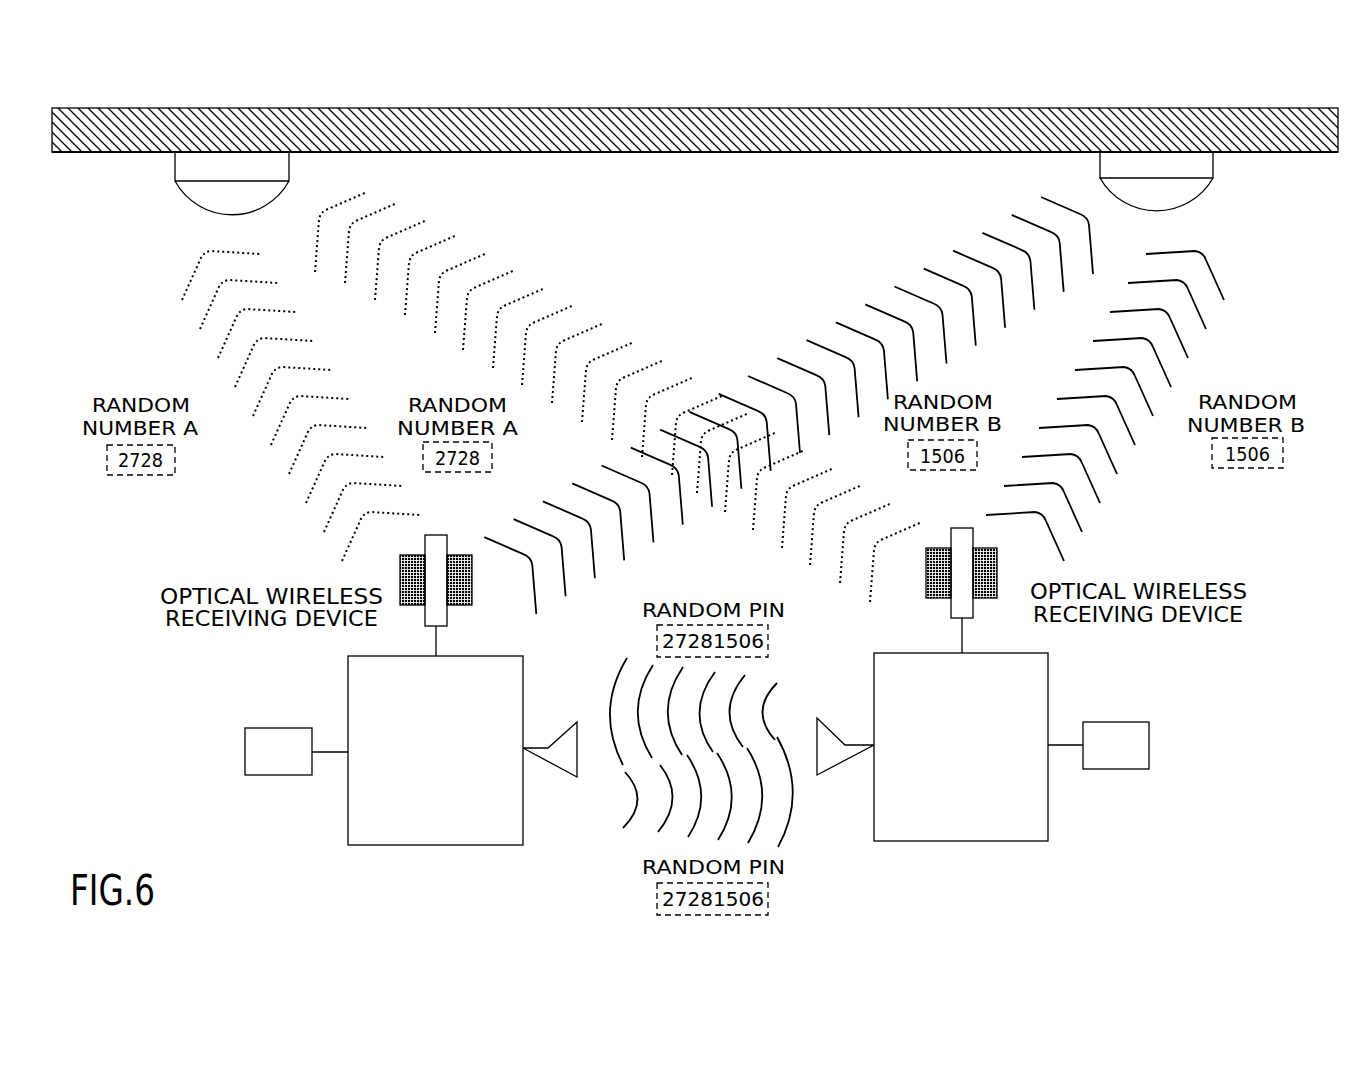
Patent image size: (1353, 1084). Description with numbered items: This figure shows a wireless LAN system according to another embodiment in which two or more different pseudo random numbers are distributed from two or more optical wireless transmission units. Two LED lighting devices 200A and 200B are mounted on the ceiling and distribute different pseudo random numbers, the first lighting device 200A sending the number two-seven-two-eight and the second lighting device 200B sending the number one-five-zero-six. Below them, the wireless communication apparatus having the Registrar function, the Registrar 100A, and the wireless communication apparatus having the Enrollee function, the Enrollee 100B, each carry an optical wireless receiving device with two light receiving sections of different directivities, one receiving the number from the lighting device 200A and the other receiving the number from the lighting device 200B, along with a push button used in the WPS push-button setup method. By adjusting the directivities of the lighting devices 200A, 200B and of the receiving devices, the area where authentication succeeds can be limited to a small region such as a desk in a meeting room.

The LED lighting device 200A is at (168, 197).
The LED lighting device 200B is at (1227, 194).
The Registrar 100A is at (327, 690).
The Enrollee 100B is at (1073, 684).